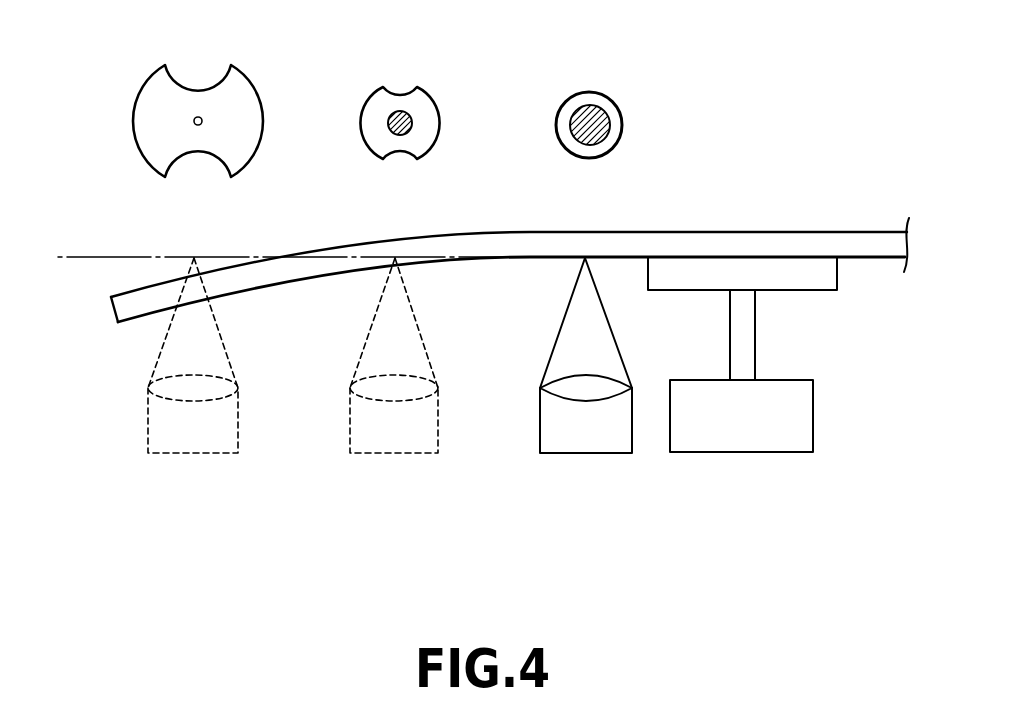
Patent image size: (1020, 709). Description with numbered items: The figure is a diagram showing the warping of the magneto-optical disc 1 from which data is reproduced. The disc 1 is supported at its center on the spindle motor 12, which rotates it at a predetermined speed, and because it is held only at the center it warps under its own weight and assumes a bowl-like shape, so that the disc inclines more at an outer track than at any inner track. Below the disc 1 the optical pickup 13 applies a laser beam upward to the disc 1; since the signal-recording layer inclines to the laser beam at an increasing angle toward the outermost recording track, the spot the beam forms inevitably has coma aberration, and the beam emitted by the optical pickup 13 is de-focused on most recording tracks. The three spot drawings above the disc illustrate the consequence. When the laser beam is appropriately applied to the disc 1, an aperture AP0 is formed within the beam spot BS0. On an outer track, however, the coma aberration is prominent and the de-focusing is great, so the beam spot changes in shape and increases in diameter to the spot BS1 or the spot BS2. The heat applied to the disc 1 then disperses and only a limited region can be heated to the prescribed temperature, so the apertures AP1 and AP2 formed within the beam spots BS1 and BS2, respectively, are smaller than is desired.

The magneto-optical disc 1 is at (866, 243).
The spindle motor 12 is at (813, 402).
The optical pickup 13 is at (592, 442).
The beam spot BS0 is at (614, 104).
The beam spot BS1 is at (418, 89).
The beam spot BS2 is at (232, 67).
The aperture AP0 is at (607, 128).
The aperture AP1 is at (411, 122).
The aperture AP2 is at (202, 120).